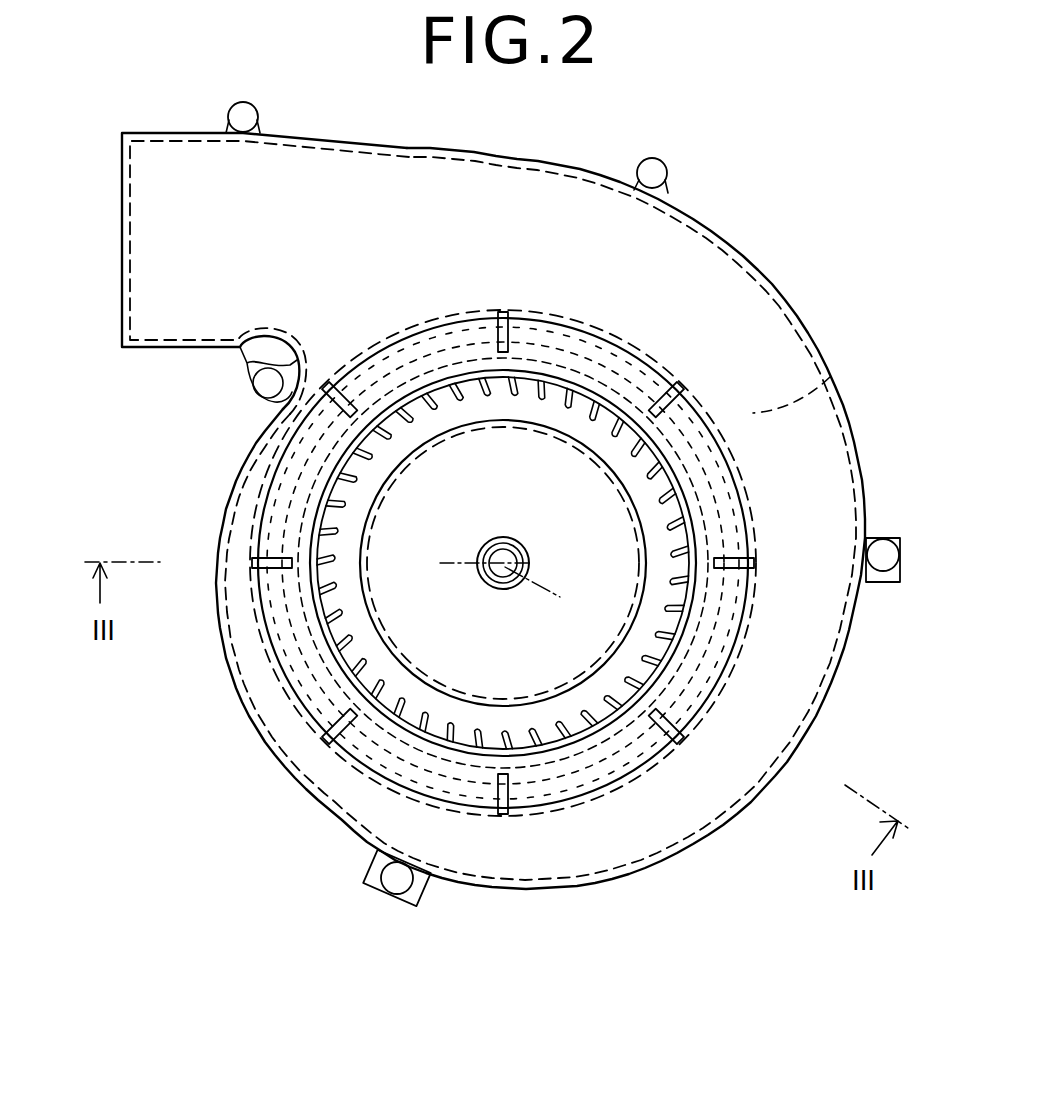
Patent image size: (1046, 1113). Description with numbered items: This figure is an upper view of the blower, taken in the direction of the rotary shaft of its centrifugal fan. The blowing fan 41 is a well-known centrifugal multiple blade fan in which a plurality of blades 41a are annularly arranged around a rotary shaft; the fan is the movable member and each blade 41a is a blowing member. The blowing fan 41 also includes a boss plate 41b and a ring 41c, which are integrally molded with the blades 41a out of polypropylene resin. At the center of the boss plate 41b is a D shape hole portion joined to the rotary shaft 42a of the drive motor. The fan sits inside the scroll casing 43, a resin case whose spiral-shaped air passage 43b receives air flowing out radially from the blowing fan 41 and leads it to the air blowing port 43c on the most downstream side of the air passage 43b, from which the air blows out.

The scroll casing 43 is at (775, 292).
The air passage 43b is at (830, 377).
The air blowing port 43c is at (160, 300).
The blowing fan 41 is at (722, 645).
The blade 41a is at (577, 717).
The boss plate 41b is at (610, 573).
The ring 41c is at (547, 743).
The rotary shaft 42a is at (503, 578).